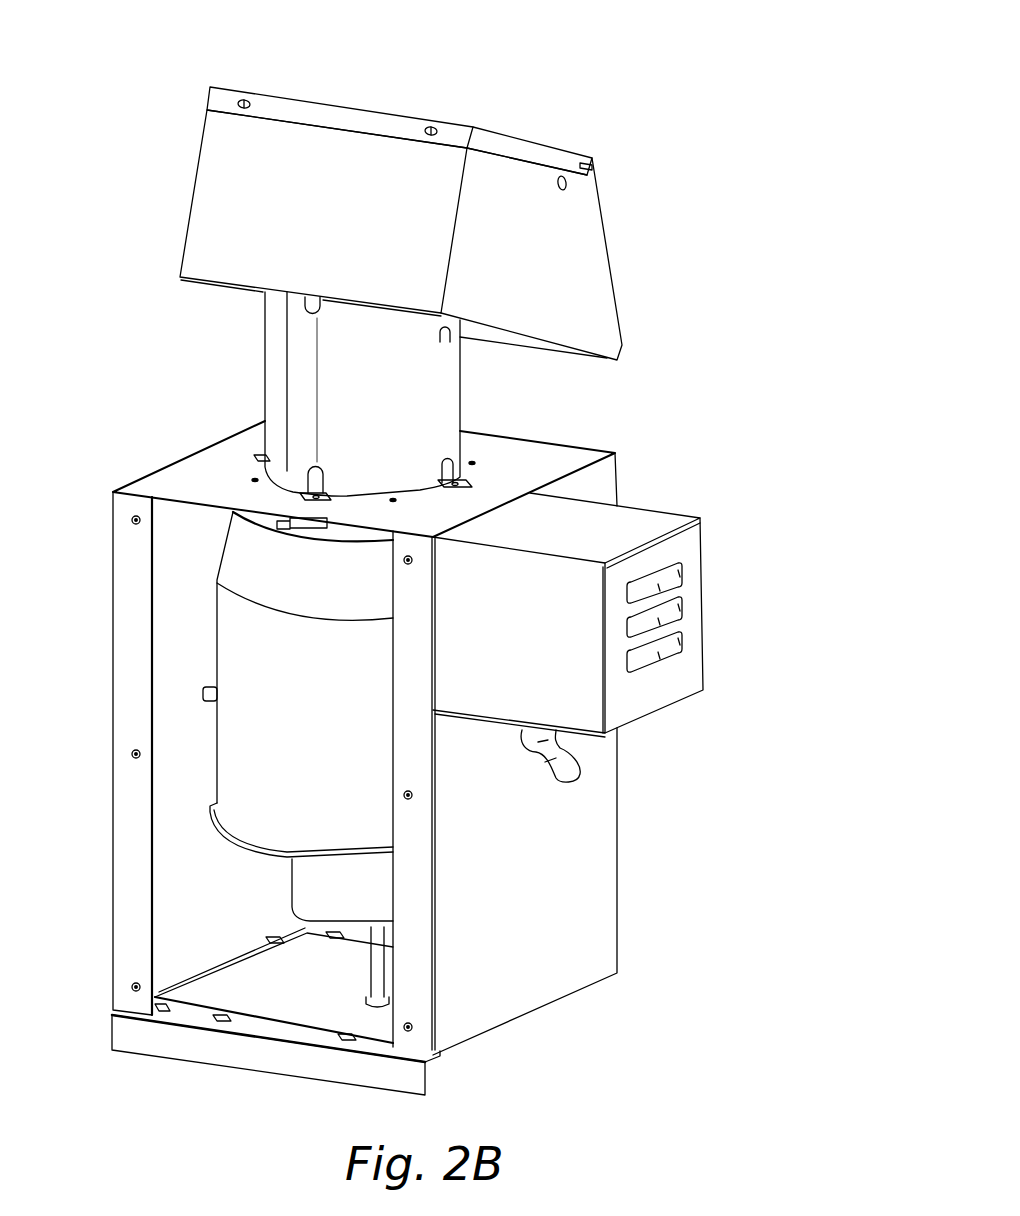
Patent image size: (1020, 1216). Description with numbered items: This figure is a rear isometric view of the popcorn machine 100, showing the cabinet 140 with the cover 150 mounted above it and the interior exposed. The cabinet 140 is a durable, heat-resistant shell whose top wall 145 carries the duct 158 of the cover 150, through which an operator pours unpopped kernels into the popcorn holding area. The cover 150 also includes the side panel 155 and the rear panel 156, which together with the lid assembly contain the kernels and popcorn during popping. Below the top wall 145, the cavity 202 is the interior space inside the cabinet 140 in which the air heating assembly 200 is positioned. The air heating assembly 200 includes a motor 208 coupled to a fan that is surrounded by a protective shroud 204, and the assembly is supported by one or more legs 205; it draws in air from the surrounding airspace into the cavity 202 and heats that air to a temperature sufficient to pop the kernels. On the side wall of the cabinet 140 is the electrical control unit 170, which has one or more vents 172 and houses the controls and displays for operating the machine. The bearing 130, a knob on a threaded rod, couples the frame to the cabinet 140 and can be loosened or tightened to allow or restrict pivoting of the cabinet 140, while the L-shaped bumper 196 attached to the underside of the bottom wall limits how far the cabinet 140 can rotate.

The popcorn machine 100 is at (178, 78).
The cover 150 is at (426, 84).
The side panel 155 is at (572, 248).
The rear panel 156 is at (232, 182).
The duct 158 is at (425, 352).
The top wall 145 is at (205, 468).
The air heating assembly 200 is at (168, 725).
The cavity 202 is at (180, 923).
The shroud 204 is at (257, 662).
The motor 208 is at (320, 890).
The legs 205 is at (382, 980).
The bumper 196 is at (255, 1055).
The cabinet 140 is at (617, 938).
The control unit 170 is at (678, 548).
The vents 172 is at (665, 612).
The bearing 130 is at (572, 755).